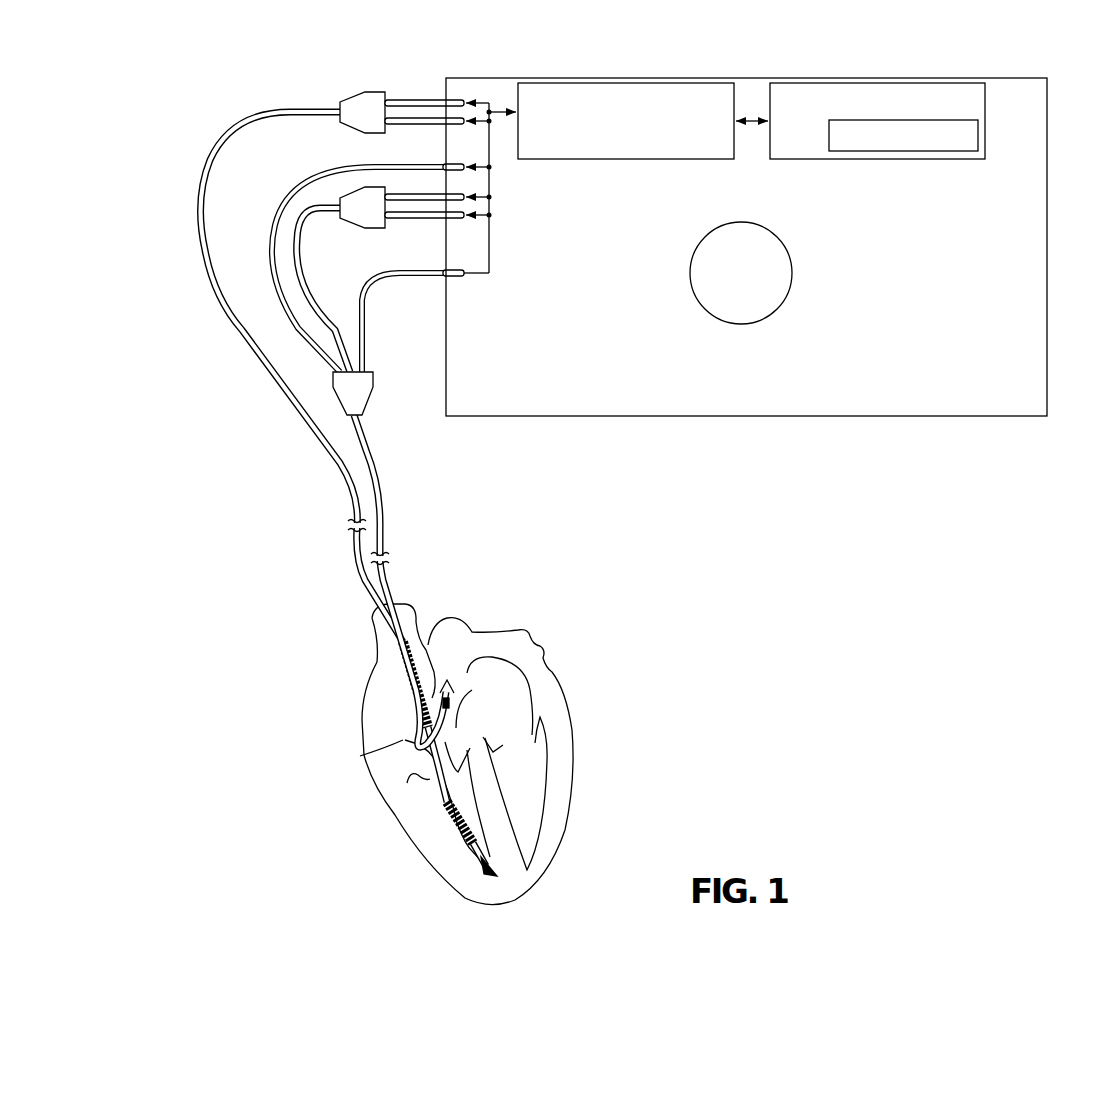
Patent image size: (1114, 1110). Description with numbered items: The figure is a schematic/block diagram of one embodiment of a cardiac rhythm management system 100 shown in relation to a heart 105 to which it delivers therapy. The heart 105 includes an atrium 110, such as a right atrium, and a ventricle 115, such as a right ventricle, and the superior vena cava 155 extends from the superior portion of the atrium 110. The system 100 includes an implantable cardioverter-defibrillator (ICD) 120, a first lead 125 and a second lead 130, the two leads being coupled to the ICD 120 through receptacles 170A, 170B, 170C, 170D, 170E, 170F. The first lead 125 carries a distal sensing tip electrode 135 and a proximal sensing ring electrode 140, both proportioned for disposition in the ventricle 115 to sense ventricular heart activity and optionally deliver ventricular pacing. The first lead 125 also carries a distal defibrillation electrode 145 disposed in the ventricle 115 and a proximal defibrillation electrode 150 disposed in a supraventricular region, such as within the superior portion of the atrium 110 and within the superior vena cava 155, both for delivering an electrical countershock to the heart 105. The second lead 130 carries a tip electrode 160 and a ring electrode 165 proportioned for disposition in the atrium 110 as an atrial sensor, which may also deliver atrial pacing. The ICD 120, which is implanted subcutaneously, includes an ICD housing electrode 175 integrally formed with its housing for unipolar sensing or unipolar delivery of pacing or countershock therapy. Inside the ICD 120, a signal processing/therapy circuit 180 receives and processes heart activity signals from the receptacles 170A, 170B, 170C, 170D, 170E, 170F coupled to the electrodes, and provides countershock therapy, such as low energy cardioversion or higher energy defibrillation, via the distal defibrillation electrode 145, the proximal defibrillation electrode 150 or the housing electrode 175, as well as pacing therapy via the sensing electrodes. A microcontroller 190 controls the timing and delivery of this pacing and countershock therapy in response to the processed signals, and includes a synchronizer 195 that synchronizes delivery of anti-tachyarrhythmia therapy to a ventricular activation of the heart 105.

The cardiac rhythm management system 100 is at (172, 125).
The heart 105 is at (564, 721).
The atrium 110 is at (393, 748).
The ventricle 115 is at (445, 835).
The implantable cardioverter-defibrillator (ICD) 120 is at (1048, 243).
The first lead 125 is at (375, 446).
The second lead 130 is at (338, 458).
The tip electrode 135 is at (511, 888).
The ring electrode 140 is at (488, 840).
The distal defibrillation electrode 145 is at (447, 818).
The proximal defibrillation electrode 150 is at (408, 638).
The superior vena cava 155 is at (363, 638).
The tip electrode 160 is at (468, 653).
The ring electrode 165 is at (455, 704).
The receptacle 170A is at (425, 101).
The receptacle 170B is at (423, 123).
The receptacle 170C is at (362, 166).
The receptacle 170D is at (445, 195).
The receptacle 170E is at (425, 221).
The receptacle 170F is at (426, 277).
The ICD housing electrode 175 is at (723, 285).
The signal processing/therapy circuit 180 is at (627, 159).
The microcontroller 190 is at (798, 159).
The synchronizer 195 is at (979, 135).